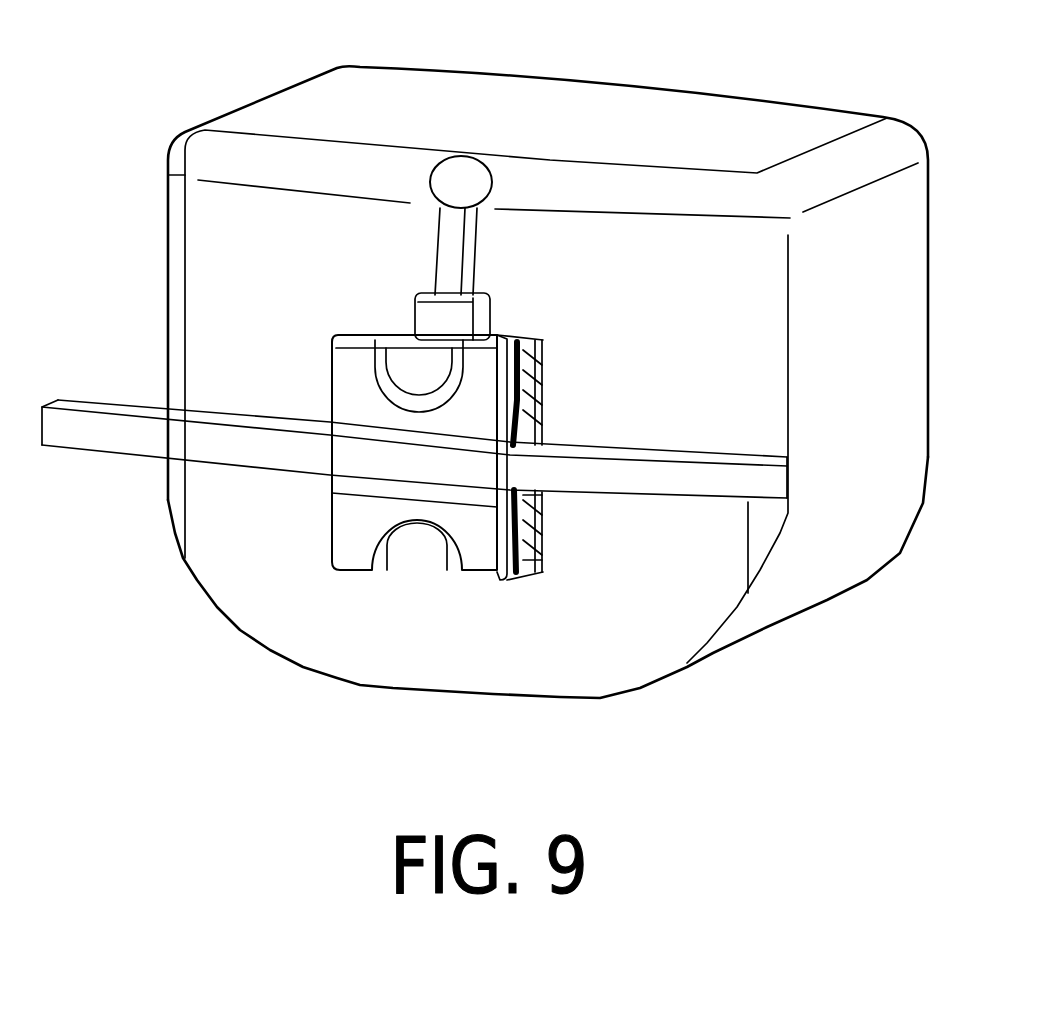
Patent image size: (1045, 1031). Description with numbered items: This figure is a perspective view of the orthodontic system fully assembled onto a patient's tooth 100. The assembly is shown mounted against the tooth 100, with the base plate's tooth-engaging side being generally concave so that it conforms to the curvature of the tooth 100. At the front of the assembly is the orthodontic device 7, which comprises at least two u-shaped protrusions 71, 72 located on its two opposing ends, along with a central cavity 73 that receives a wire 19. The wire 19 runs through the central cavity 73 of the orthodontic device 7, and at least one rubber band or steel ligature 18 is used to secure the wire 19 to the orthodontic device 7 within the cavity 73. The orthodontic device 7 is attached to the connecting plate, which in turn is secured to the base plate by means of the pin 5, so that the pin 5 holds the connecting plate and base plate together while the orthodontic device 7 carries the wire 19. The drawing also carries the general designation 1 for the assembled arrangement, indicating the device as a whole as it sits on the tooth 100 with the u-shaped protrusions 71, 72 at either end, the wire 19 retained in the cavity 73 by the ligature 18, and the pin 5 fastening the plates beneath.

The tooth 100 is at (745, 132).
The pin 5 is at (468, 250).
The u-shaped protrusion 71 is at (447, 380).
The clamping device 1 is at (451, 446).
The rubber band or steel ligature 18 is at (327, 433).
The wire 19 is at (607, 477).
The central cavity 73 is at (541, 512).
The u-shaped protrusion 72 is at (430, 553).
The orthodontic device 7 is at (345, 527).